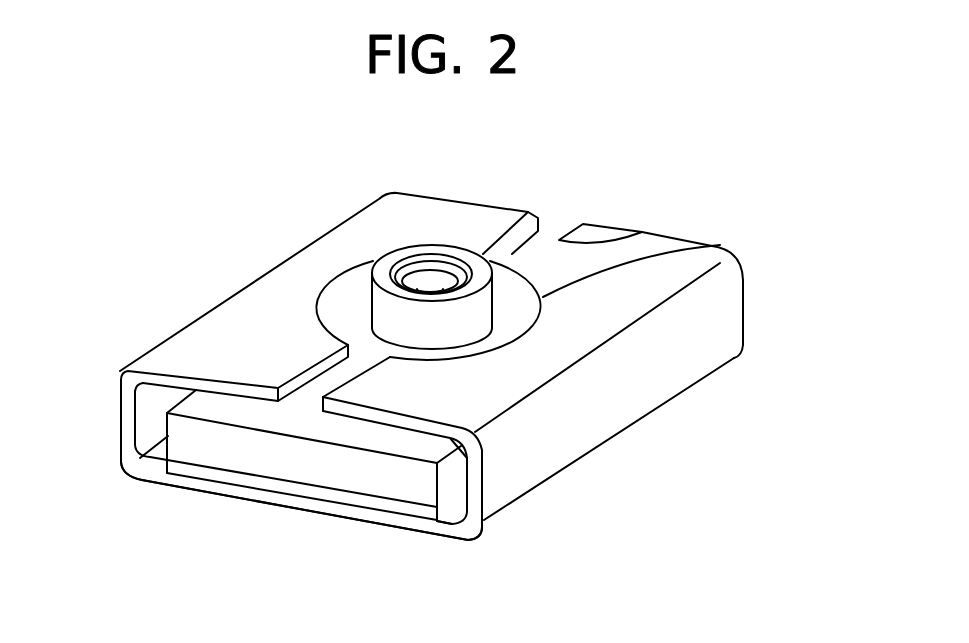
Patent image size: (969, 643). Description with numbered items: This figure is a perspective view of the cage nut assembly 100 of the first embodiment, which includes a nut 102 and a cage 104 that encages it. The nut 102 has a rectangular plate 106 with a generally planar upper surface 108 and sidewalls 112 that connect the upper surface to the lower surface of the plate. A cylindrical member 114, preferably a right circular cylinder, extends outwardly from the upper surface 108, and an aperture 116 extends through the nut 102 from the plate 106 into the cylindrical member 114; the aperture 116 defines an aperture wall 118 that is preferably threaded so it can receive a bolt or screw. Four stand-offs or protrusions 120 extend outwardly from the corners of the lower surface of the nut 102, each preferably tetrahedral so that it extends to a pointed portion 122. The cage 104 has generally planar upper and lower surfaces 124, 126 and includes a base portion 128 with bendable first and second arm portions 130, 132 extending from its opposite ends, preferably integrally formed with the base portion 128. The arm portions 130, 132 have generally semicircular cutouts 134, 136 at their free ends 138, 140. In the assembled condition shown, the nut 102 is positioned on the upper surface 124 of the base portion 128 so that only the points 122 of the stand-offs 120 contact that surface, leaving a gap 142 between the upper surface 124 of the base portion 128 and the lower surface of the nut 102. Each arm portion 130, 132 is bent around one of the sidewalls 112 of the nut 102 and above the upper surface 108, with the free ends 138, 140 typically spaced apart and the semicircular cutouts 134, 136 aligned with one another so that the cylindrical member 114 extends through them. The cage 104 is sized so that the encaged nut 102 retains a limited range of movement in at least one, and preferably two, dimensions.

The cage nut assembly 100 is at (675, 176).
The nut 102 is at (266, 444).
The cage 104 is at (700, 345).
The rectangular plate 106 is at (181, 458).
The upper surface 108 is at (517, 250).
The sidewalls 112 is at (357, 467).
The cylindrical member 114 is at (400, 253).
The aperture 116 is at (428, 290).
The aperture wall 118 is at (440, 259).
The stand-offs or protrusions 120 is at (175, 486).
The pointed portion 122 is at (155, 482).
The upper surface 124 is at (273, 483).
The lower surface 126 is at (528, 478).
The base portion 128 is at (290, 508).
The first arm portion 130 is at (713, 306).
The second arm portion 132 is at (187, 350).
The semicircular cutout 134 is at (718, 246).
The semicircular cutout 136 is at (347, 300).
The free end 138 is at (612, 237).
The free end 140 is at (306, 362).
The gap 142 is at (322, 490).